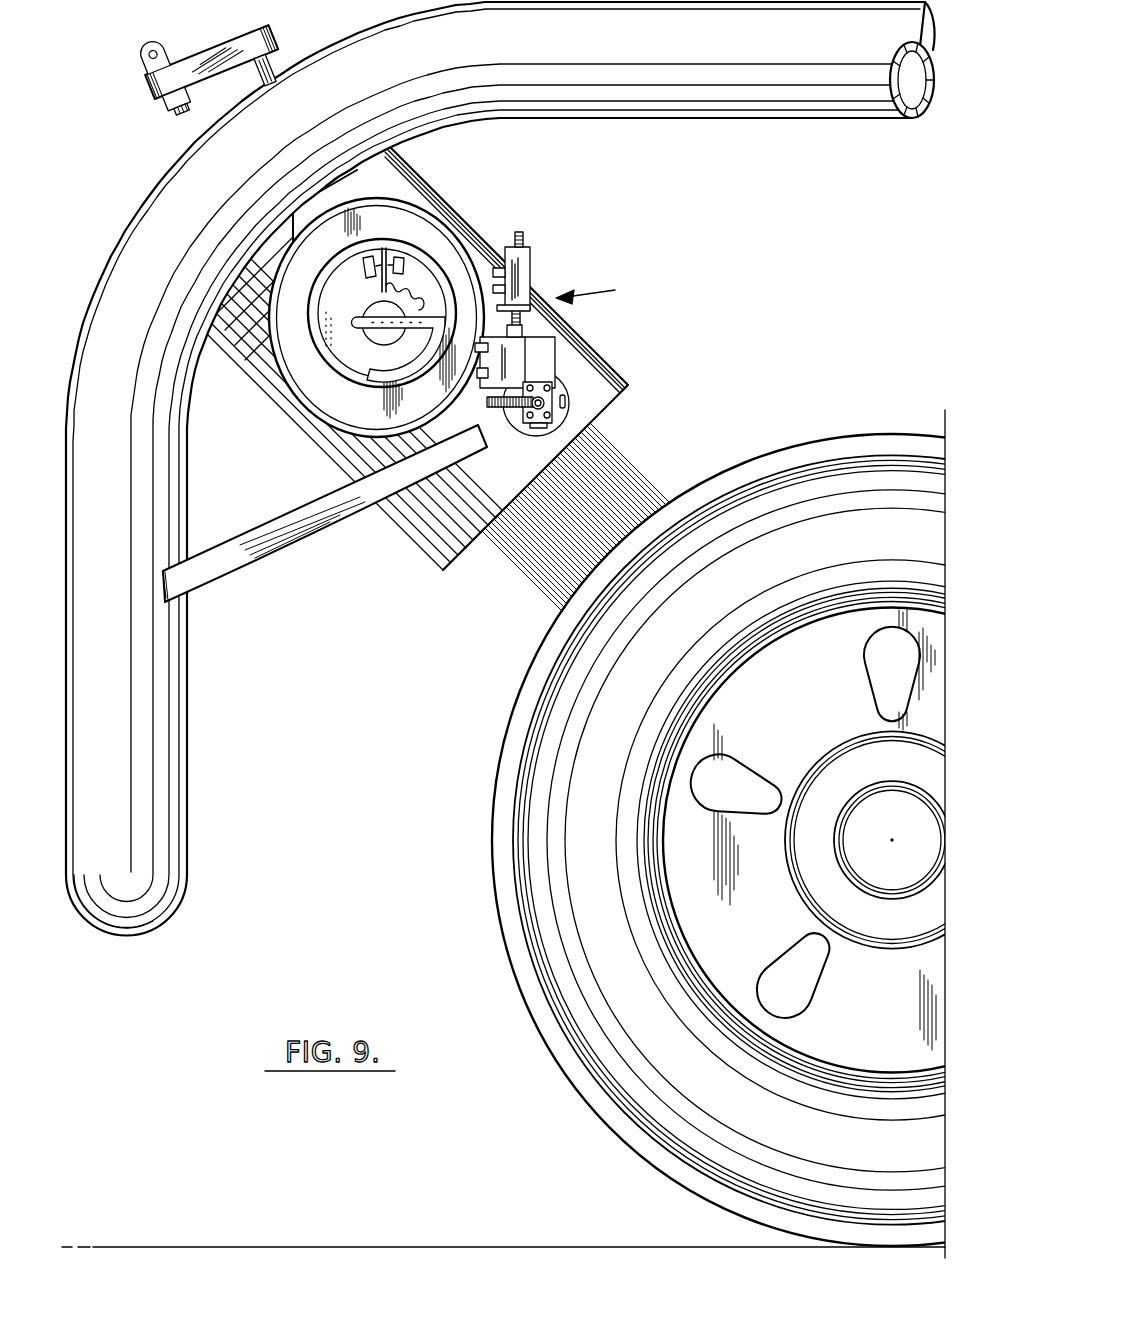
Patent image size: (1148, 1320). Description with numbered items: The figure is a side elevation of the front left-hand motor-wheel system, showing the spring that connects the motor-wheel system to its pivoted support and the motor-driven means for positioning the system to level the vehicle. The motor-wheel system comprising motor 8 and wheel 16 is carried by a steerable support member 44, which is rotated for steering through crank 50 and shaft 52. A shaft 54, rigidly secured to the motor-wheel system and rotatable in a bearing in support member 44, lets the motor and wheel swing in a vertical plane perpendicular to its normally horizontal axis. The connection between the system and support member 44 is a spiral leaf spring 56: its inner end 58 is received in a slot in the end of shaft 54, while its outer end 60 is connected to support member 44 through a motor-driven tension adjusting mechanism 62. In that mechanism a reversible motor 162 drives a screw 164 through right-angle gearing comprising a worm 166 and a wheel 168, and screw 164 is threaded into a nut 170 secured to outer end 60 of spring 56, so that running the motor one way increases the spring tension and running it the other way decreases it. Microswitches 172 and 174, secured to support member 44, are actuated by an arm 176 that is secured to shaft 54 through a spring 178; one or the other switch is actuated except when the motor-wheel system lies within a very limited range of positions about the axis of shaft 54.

The motor 8 is at (586, 357).
The wheel 16 is at (812, 462).
The steerable motor-wheel system support member 44 is at (360, 403).
The crank 50 is at (210, 58).
The shaft 52 is at (278, 62).
The shaft 54 is at (383, 336).
The spiral leaf spring 56 is at (470, 219).
The inner end of spring 58 is at (360, 317).
The outer end of spring 60 is at (520, 273).
The motor-driven tension adjusting mechanism 62 is at (606, 286).
The motor 162 is at (565, 414).
The screw 164 is at (521, 323).
The worm 166 is at (541, 403).
The wheel 168 is at (533, 428).
The nut 170 is at (528, 240).
The microswitch 172 is at (405, 268).
The microswitch 174 is at (351, 273).
The arm 176 is at (384, 291).
The spring 178 is at (420, 300).